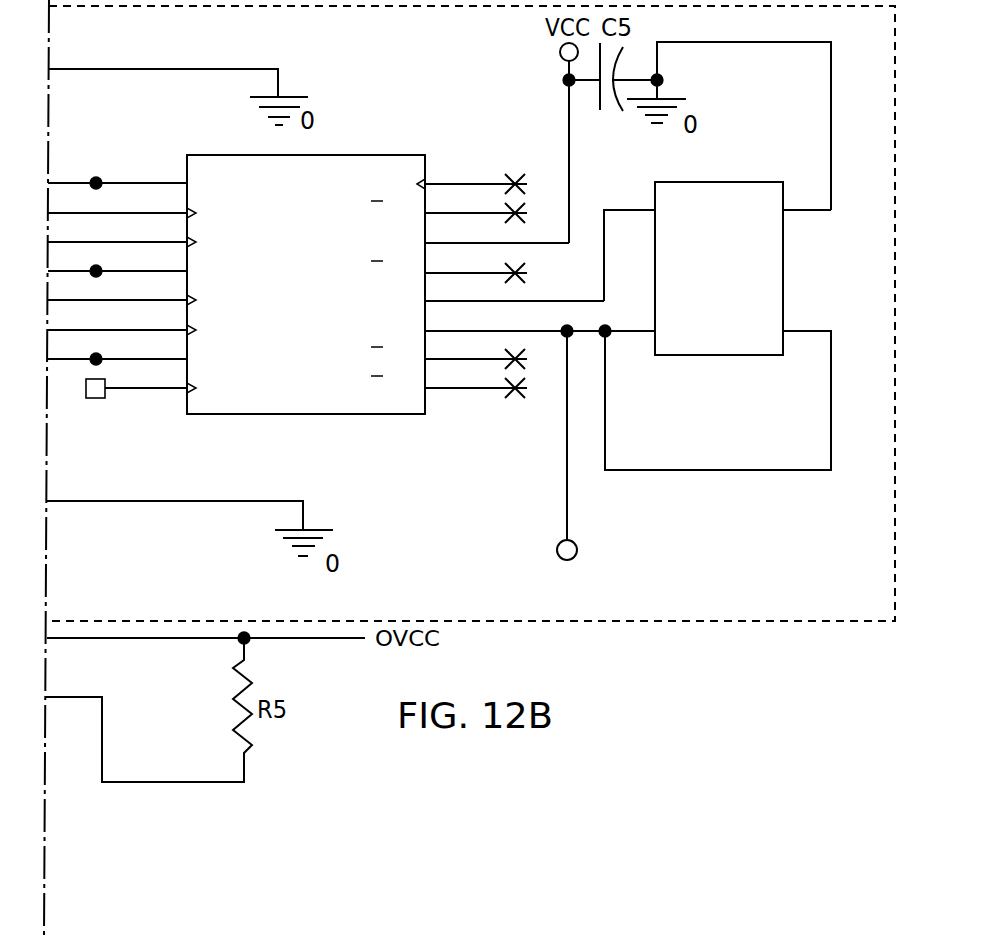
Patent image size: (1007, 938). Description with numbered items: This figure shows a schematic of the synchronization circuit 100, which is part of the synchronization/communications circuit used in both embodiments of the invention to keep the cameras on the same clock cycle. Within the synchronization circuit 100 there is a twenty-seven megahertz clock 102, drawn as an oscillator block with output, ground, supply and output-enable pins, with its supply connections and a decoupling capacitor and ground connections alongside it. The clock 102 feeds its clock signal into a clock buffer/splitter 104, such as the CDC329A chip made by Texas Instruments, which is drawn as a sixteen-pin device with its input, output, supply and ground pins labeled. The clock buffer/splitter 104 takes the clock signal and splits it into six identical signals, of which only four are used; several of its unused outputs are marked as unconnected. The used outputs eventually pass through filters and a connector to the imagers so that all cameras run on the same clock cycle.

The synchronization circuit 100 is at (703, 623).
The 27 MHz clock 102 is at (853, 203).
The clock buffer/splitter 104 is at (408, 138).